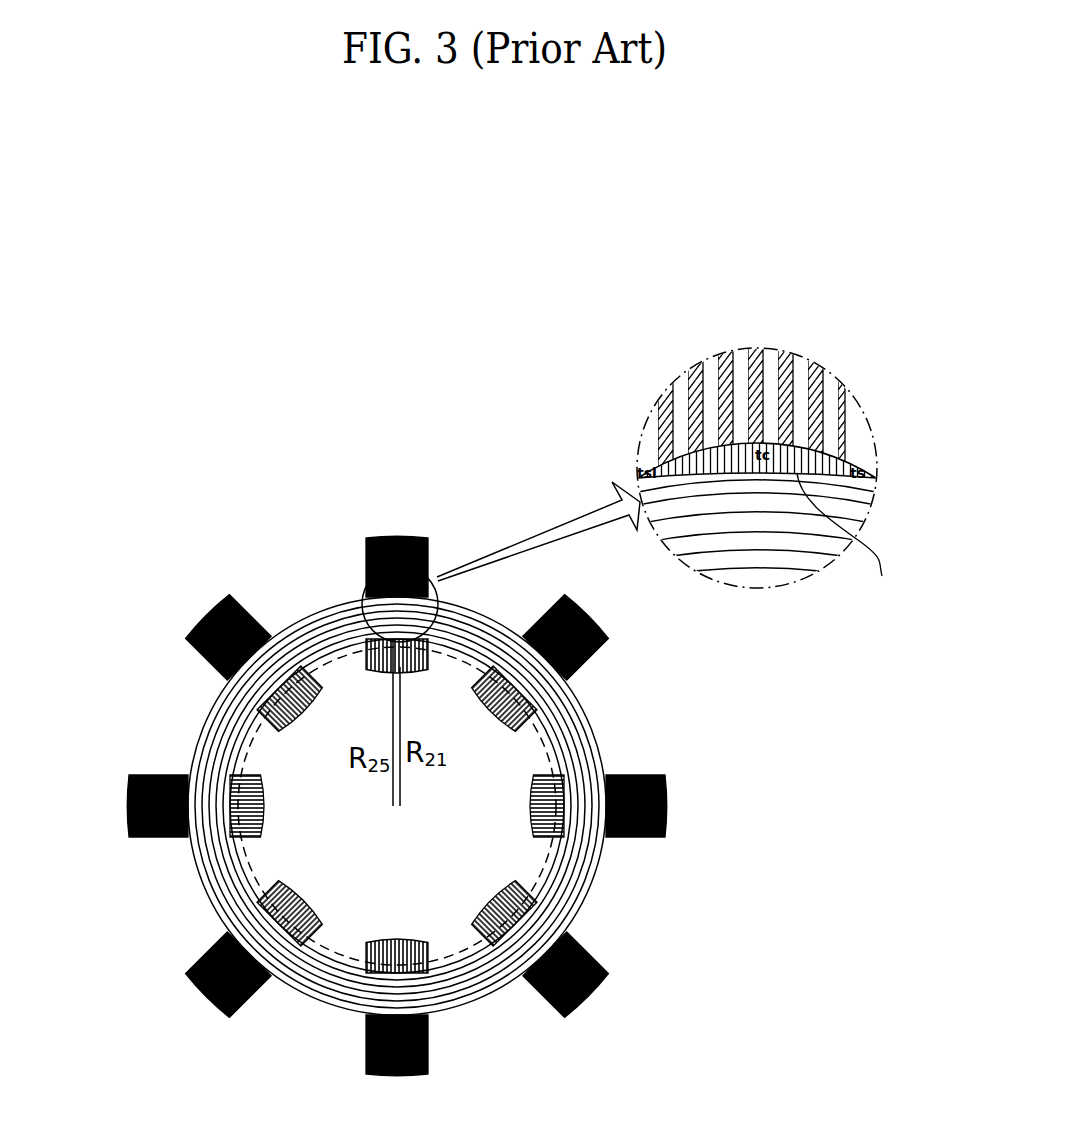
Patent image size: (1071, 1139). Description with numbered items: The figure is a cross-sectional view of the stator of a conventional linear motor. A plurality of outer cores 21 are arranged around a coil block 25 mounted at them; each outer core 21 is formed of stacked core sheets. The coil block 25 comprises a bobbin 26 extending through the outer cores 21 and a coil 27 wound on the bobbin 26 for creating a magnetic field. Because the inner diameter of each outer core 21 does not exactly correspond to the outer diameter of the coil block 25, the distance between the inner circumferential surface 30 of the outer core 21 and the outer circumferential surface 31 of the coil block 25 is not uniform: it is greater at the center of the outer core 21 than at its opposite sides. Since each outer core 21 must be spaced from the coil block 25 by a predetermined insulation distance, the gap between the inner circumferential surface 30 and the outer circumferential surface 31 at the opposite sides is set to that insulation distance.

The outer core 21 is at (628, 644).
The coil block 25 is at (494, 744).
The bobbin 26 is at (208, 722).
The coil 27 is at (238, 753).
The inner circumferential surface 30 is at (386, 610).
The outer circumferential surface 31 is at (423, 600).